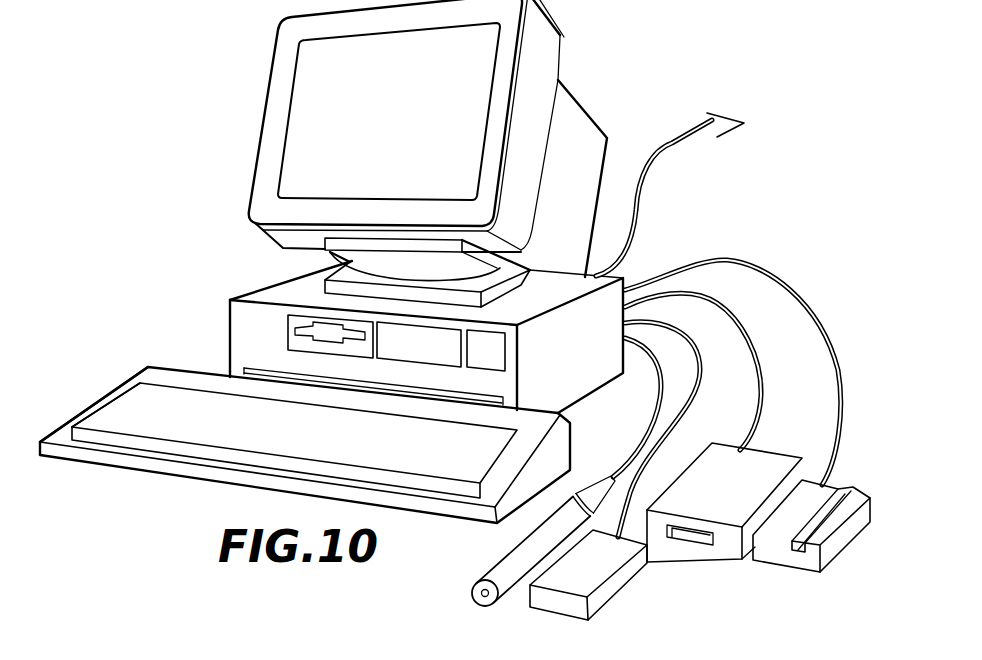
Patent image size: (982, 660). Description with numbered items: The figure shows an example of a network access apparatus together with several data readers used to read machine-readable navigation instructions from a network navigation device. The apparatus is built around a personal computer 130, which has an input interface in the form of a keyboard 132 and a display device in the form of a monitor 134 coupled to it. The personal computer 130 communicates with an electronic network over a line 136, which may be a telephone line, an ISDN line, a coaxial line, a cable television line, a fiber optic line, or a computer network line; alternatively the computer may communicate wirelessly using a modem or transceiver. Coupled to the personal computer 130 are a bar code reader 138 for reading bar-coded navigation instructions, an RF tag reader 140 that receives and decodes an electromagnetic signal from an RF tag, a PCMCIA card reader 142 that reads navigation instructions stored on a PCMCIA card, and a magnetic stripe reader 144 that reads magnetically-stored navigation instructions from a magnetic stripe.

The personal computer 130 is at (255, 293).
The keyboard 132 is at (120, 387).
The monitor 134 is at (272, 57).
The line 136 is at (648, 178).
The bar code reader 138 is at (507, 556).
The RF tag reader 140 is at (610, 600).
The PCMCIA card reader 142 is at (743, 561).
The magnetic stripe reader 144 is at (833, 567).